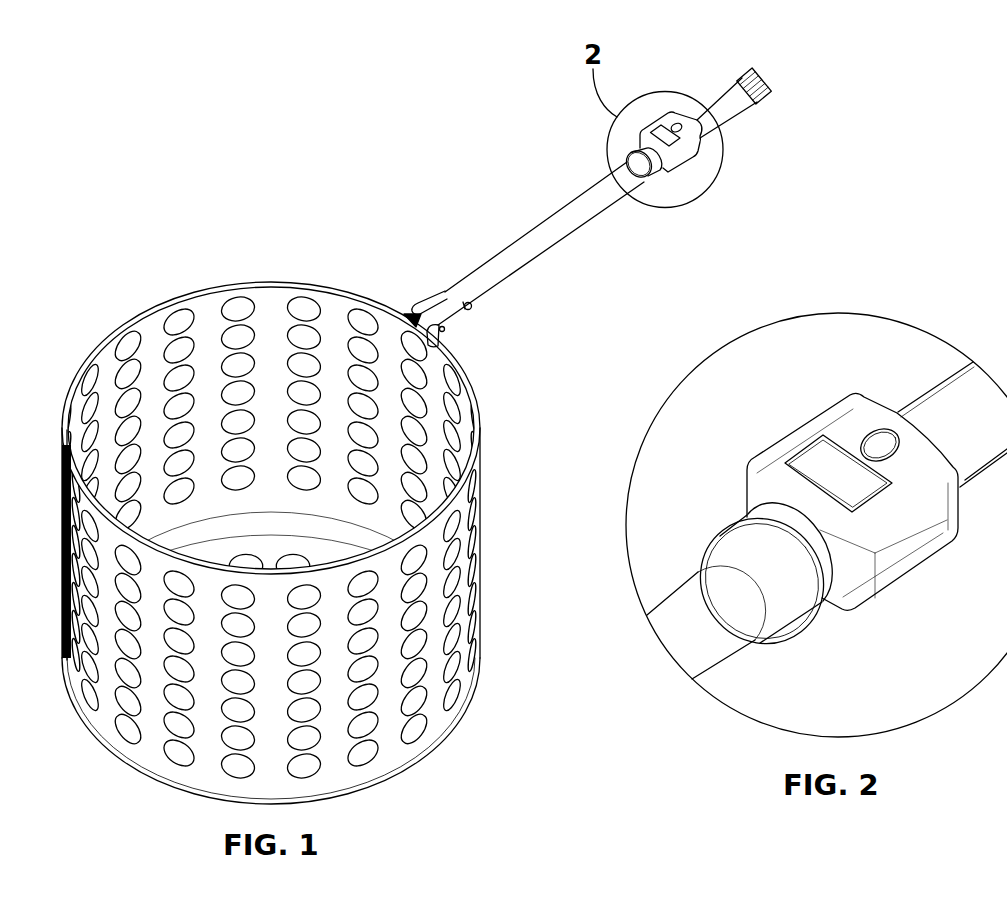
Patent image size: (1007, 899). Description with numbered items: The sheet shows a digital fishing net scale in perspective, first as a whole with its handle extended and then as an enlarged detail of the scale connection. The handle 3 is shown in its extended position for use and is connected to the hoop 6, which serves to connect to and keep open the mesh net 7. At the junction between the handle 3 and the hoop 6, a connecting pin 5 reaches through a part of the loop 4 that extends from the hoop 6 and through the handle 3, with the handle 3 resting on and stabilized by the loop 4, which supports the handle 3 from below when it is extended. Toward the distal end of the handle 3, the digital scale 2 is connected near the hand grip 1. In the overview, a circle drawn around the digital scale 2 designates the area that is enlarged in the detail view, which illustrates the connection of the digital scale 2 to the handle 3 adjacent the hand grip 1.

In FIG. 1, the hand grip 1 is at (722, 88).
In FIG. 2, the hand grip 1 is at (918, 400).
In FIG. 1, the digital scale 2 is at (638, 135).
In FIG. 2, the digital scale 2 is at (763, 458).
In FIG. 1, the handle 3 is at (515, 242).
In FIG. 2, the handle 3 is at (678, 588).
In FIG. 1, the loop 4 is at (478, 306).
In FIG. 1, the connecting pin 5 is at (444, 329).
In FIG. 1, the hoop 6 is at (291, 286).
In FIG. 1, the mesh net 7 is at (207, 327).